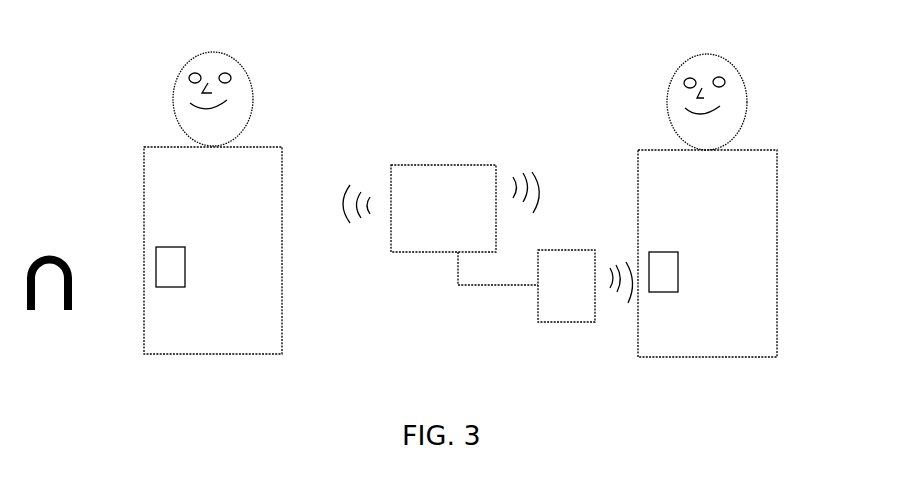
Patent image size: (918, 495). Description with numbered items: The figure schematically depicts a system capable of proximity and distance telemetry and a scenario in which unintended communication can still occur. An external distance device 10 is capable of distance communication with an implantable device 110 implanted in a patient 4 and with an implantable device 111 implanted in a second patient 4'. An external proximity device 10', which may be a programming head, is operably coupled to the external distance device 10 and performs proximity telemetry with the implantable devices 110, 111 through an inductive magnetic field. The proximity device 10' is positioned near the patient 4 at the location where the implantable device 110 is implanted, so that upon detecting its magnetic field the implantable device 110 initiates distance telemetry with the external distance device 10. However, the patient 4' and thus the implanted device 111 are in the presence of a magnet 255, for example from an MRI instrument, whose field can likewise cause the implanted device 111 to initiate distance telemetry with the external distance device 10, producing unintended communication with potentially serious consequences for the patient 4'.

The patient 4' is at (241, 203).
The patient 4 is at (732, 205).
The magnet 255 is at (45, 252).
The implantable device 111 is at (194, 255).
The implantable device 110 is at (688, 260).
The external distance device 10 is at (441, 225).
The external proximity device 10' is at (585, 286).